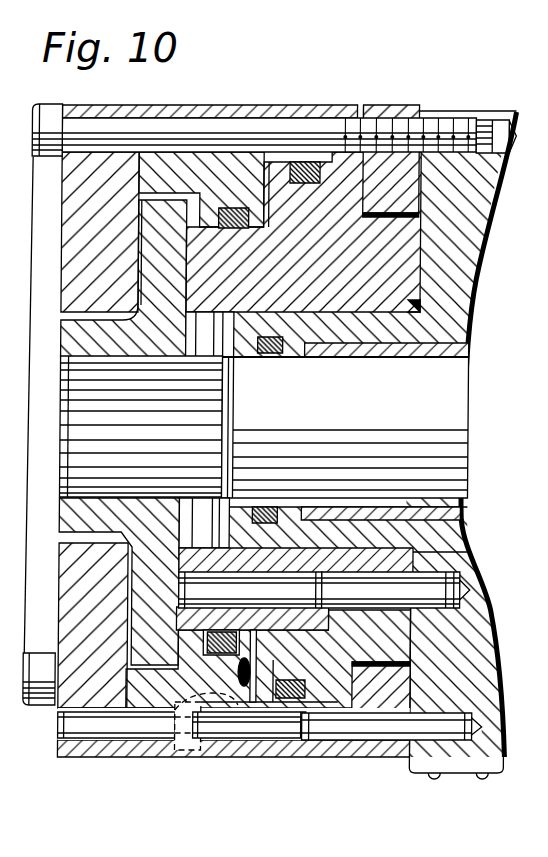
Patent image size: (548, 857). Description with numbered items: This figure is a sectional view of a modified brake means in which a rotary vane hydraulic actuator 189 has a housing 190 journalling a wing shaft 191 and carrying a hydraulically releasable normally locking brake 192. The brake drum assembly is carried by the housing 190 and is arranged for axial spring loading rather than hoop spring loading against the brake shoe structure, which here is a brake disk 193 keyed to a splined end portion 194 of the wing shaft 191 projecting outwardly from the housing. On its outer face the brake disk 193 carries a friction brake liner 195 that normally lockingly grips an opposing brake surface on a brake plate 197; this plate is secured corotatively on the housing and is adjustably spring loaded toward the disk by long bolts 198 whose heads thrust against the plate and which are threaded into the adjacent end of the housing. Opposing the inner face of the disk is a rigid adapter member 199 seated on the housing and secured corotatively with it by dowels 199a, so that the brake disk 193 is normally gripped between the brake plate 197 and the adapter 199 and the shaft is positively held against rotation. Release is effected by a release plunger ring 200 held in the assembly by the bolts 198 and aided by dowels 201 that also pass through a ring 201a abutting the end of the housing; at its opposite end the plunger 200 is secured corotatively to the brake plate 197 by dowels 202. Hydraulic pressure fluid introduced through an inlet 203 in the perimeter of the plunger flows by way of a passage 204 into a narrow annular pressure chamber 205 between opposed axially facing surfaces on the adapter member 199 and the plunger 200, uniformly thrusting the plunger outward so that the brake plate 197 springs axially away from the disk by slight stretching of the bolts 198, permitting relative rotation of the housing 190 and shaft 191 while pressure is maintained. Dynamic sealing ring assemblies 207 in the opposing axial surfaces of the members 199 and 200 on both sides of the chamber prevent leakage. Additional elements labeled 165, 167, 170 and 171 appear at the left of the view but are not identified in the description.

The frame member 165 is at (132, 146).
The bearing support member 167 is at (22, 172).
The side wall 170 is at (69, 276).
The side wall 171 is at (64, 554).
The rotary vane hydraulic actuator 189 is at (478, 78).
The housing 190 is at (526, 99).
The wing shaft 191 is at (408, 401).
The brake 192 is at (122, 80).
The brake disk 193 is at (128, 340).
The splined end portion 194 is at (191, 400).
The friction brake liner 195 is at (133, 602).
The brake plate 197 is at (58, 705).
The bolts 198 is at (252, 97).
The adapter member 199 is at (336, 138).
The dowels 199a is at (422, 586).
The release plunger ring 200 is at (306, 94).
The dowels 201 is at (392, 737).
The ring 201a is at (359, 760).
The dowels 202 is at (107, 727).
The inlet 203 is at (215, 762).
The passage 204 is at (250, 683).
The annular pressure chamber 205 is at (264, 662).
The dynamic sealing ring assemblies 207 is at (226, 210).